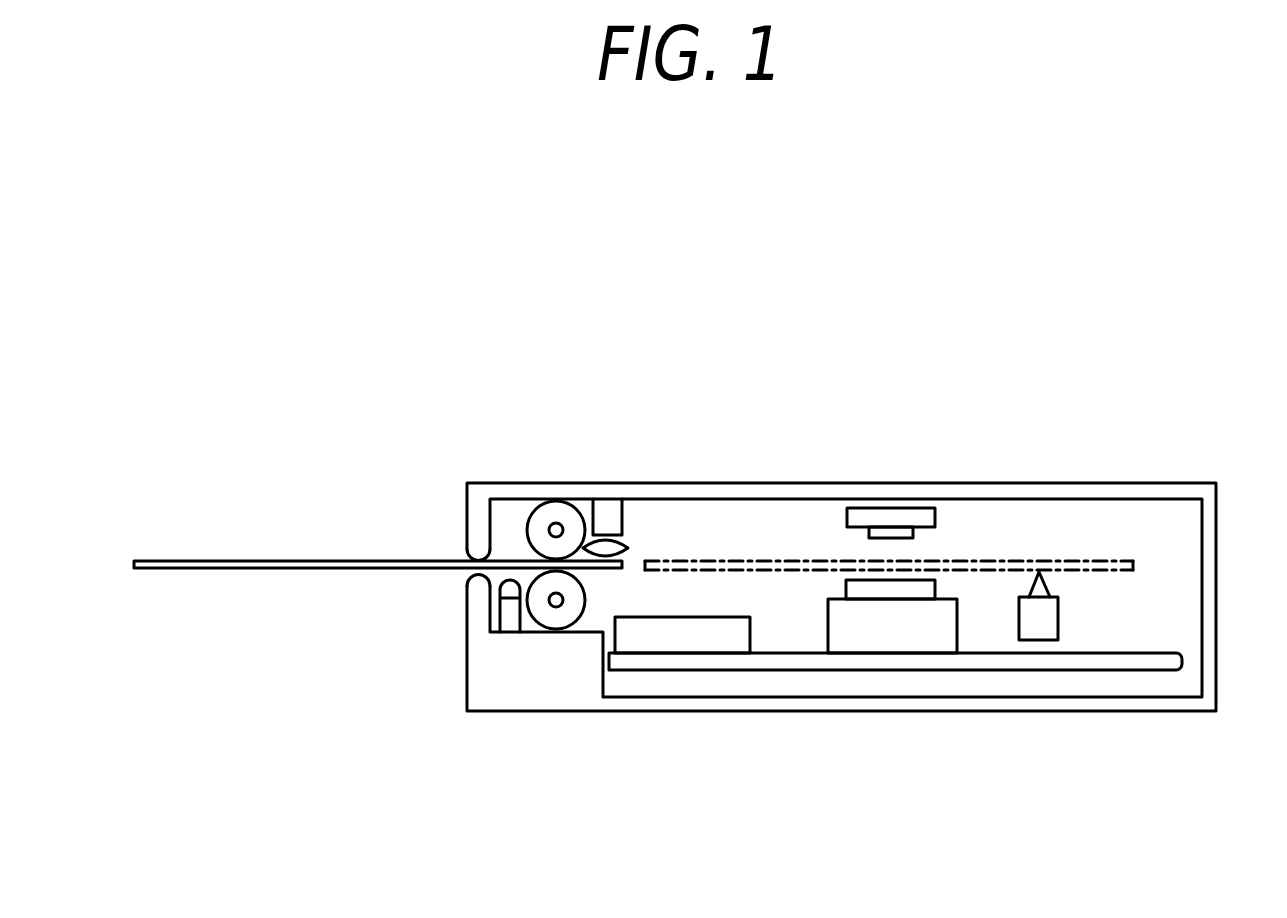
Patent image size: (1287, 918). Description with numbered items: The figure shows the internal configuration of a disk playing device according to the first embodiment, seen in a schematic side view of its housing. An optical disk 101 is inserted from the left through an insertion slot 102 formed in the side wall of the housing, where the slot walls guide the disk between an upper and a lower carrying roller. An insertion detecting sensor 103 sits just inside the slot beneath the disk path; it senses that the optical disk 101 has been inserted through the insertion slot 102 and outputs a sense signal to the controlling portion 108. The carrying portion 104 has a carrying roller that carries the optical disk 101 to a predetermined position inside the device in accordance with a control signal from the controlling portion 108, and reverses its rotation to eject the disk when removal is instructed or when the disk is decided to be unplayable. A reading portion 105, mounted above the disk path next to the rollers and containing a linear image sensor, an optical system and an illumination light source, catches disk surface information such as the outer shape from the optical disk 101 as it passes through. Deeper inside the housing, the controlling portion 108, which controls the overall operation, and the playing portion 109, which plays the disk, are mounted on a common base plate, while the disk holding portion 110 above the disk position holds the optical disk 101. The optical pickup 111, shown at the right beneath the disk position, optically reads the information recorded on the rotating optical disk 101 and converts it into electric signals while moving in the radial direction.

The optical disk 101 is at (216, 567).
The insertion slot 102 is at (478, 542).
The insertion detecting sensor 103 is at (488, 580).
The carrying portion 104 is at (548, 618).
The reading portion 105 is at (609, 508).
The controlling portion 108 is at (718, 643).
The playing portion 109 is at (878, 643).
The disk holding portion 110 is at (907, 508).
The optical pickup 111 is at (1032, 632).